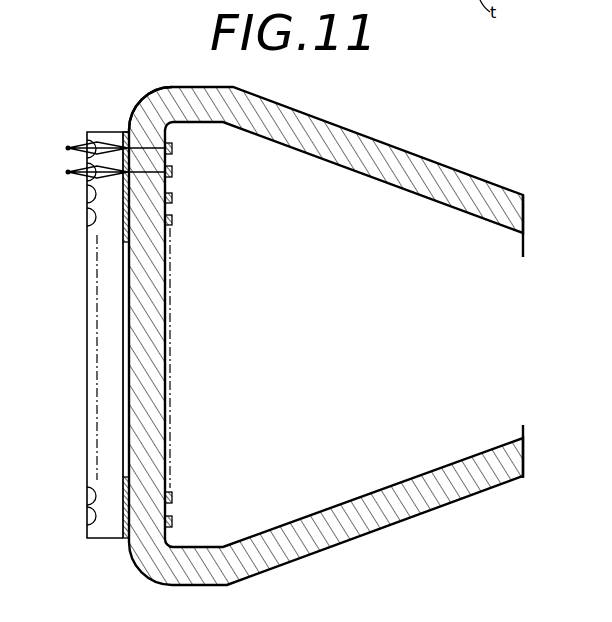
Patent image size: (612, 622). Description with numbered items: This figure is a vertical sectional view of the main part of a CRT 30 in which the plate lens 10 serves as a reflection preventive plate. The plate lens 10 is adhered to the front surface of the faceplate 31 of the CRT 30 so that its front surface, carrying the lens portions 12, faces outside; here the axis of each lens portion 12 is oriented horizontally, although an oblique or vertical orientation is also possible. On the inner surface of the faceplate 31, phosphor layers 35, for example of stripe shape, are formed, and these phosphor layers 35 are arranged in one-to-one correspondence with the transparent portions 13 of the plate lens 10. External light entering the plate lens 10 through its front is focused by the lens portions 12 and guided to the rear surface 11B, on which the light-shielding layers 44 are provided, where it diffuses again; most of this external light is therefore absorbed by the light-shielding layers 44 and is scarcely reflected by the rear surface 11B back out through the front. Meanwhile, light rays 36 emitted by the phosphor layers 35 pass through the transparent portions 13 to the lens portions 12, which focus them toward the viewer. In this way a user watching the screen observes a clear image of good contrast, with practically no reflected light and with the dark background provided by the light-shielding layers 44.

The plate lens 10 is at (103, 537).
The rear surface 11B is at (129, 311).
The lens portions 12 is at (88, 218).
The transparent portions 13 is at (125, 222).
The CRT 30 is at (421, 135).
The faceplate 31 is at (146, 368).
The phosphor layers 35 is at (173, 170).
The light rays 36 is at (142, 117).
The light-shielding layers 44 is at (127, 132).